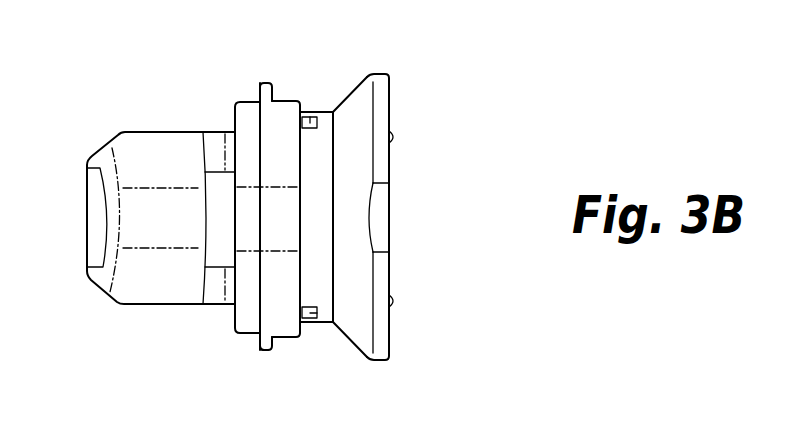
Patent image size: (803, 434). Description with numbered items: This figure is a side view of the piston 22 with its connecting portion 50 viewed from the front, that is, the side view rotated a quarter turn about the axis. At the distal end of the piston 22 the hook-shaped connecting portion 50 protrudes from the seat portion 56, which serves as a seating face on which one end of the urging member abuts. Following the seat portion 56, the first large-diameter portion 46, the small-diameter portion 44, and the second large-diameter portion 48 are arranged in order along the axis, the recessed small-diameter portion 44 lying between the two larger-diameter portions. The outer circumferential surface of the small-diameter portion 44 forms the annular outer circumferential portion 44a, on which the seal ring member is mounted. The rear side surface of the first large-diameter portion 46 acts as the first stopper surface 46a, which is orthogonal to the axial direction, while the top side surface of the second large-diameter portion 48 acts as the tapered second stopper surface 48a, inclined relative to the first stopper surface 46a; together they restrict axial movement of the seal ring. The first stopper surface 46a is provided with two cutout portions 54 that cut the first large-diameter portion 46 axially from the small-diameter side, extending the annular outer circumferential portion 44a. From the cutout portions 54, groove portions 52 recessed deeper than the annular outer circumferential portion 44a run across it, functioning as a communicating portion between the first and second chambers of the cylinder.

The piston 22 is at (286, 394).
The small-diameter portion 44 is at (320, 238).
The annular outer circumferential portion 44a is at (315, 202).
The first large-diameter portion 46 is at (275, 140).
The first stopper surface 46a is at (302, 156).
The second large-diameter portion 48 is at (383, 93).
The second stopper surface 48a is at (357, 312).
The connecting portion 50 is at (157, 202).
The groove portion 52 is at (311, 112).
The cutout portion 54 is at (285, 91).
The seat portion 56 is at (260, 350).